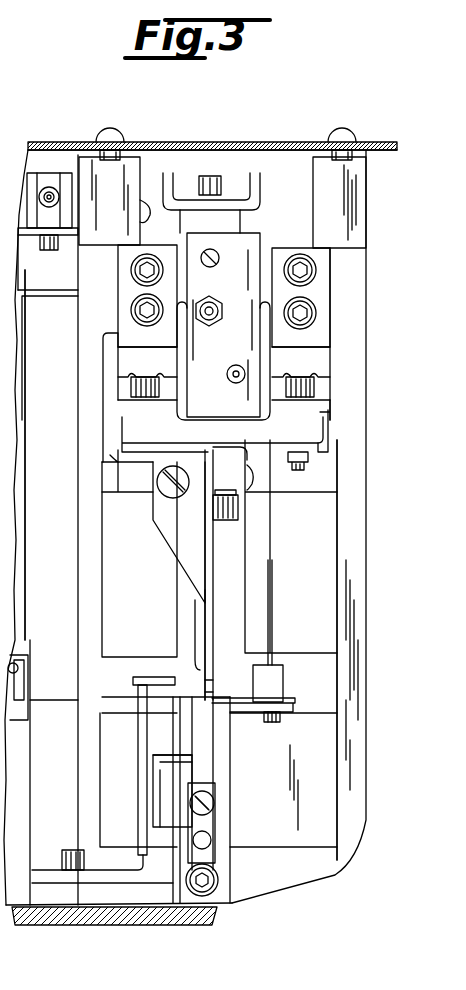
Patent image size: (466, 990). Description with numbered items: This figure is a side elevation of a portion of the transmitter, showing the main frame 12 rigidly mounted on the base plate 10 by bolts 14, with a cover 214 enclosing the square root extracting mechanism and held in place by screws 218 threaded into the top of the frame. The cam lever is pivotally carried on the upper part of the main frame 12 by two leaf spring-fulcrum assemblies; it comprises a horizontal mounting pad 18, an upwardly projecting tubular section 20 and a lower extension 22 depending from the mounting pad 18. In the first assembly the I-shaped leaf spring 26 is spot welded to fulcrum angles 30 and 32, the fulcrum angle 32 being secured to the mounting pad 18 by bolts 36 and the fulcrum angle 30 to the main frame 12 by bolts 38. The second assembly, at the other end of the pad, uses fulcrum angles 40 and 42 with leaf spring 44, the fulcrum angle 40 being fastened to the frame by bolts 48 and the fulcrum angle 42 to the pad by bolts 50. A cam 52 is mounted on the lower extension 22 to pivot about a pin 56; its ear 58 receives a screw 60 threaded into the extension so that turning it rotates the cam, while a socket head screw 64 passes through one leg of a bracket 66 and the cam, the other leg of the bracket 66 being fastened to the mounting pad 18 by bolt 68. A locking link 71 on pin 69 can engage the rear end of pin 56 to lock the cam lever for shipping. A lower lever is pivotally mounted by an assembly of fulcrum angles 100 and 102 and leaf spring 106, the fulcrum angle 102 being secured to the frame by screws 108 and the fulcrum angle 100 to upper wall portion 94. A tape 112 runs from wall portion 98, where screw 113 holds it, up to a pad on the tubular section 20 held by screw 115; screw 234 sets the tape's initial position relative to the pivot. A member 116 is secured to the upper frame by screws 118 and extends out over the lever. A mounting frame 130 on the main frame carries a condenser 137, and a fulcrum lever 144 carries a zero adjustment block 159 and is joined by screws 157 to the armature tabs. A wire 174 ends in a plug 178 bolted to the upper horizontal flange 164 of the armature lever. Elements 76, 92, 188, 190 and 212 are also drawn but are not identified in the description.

The base plate 10 is at (112, 925).
The main frame 12 is at (360, 225).
The bolts 14 is at (60, 850).
The horizontal mounting pad 18 is at (218, 425).
The tubular section 20 is at (255, 232).
The lower extension 22 is at (182, 605).
The leaf spring 26 is at (316, 360).
The fulcrum angle 30 is at (326, 297).
The fulcrum angle 32 is at (322, 405).
The bolts 36 is at (302, 377).
The bolts 38 is at (298, 254).
The fulcrum angle 40 is at (118, 268).
The fulcrum angle 42 is at (118, 405).
The leaf spring 44 is at (146, 352).
The bolts 48 is at (140, 277).
The bolts 50 is at (152, 377).
The cam 52 is at (213, 610).
The pin 56 is at (152, 672).
The ear 58 is at (168, 527).
The screw 60 is at (190, 455).
The socket head screw 64 is at (225, 522).
The bracket 66 is at (203, 538).
The bolt 68 is at (300, 475).
The pin 69 is at (118, 697).
The locking link 71 is at (138, 828).
The pin 76 is at (238, 365).
The block 92 is at (153, 780).
The upper wall portion 94 is at (165, 755).
The wall portion 98 is at (215, 803).
The fulcrum angle 100 is at (232, 745).
The fulcrum angle 102 is at (222, 760).
The leaf spring 106 is at (235, 732).
The screws 108 is at (218, 877).
The tape 112 is at (215, 776).
The screw 113 is at (212, 808).
The screw 115 is at (220, 258).
The member 116 is at (255, 195).
The screws 118 is at (220, 176).
The mounting frame 130 is at (80, 270).
The condenser 137 is at (338, 535).
The fulcrum lever 144 is at (72, 235).
The screws 157 is at (148, 218).
The zero adjustment block 159 is at (35, 175).
The upper horizontal flange 164 is at (296, 703).
The wire 174 is at (272, 612).
The plug 178 is at (283, 678).
The member 188 is at (64, 300).
The column 190 is at (125, 564).
The bracket 212 is at (258, 455).
The cover 214 is at (216, 142).
The screws 218 is at (118, 132).
The screw 234 is at (220, 303).